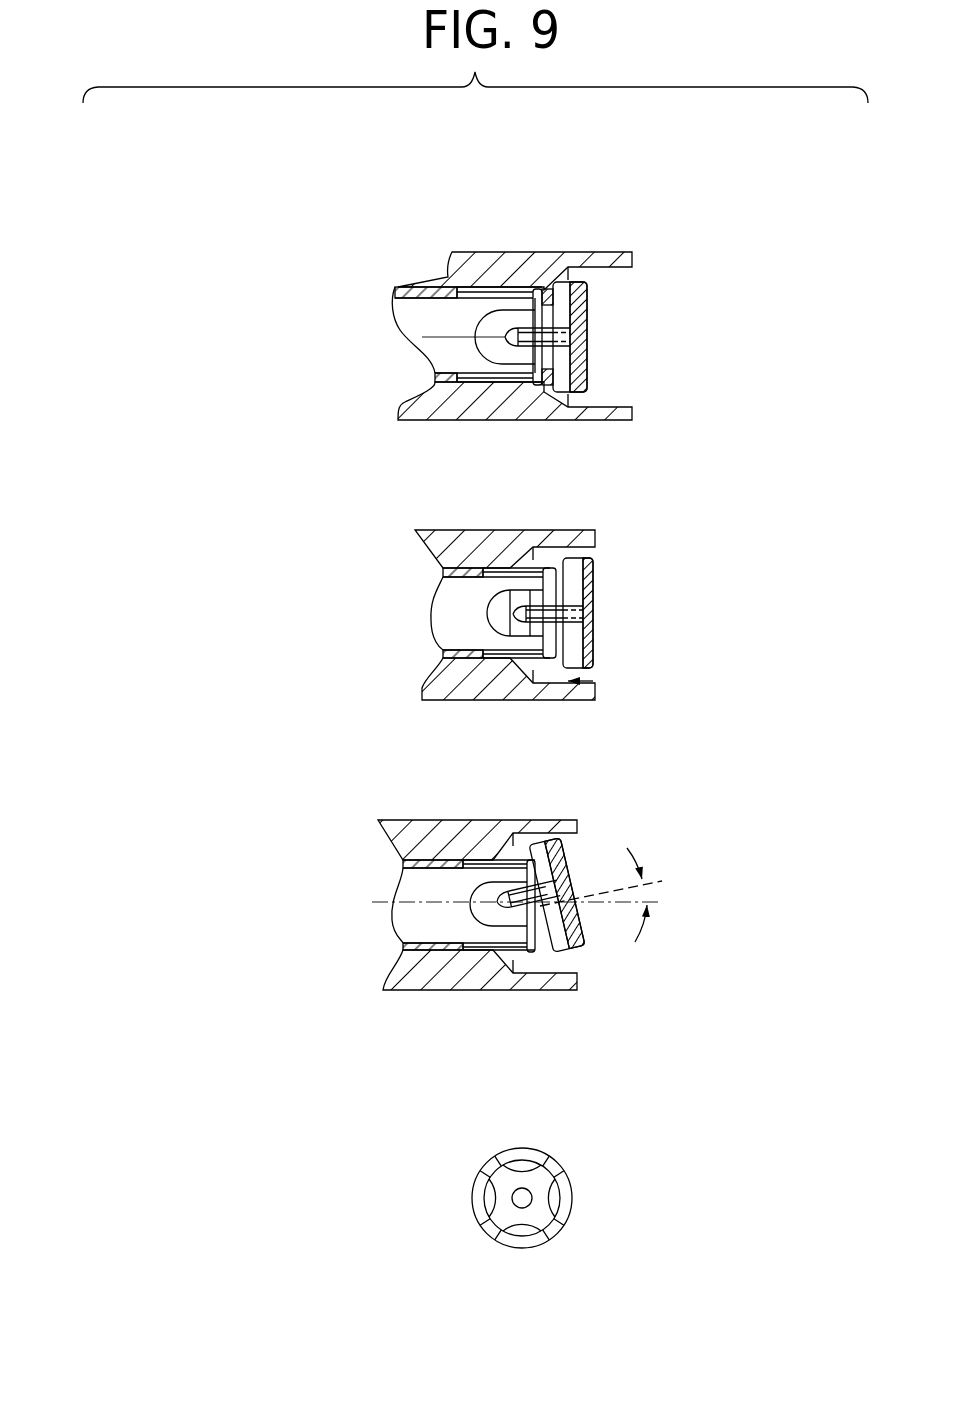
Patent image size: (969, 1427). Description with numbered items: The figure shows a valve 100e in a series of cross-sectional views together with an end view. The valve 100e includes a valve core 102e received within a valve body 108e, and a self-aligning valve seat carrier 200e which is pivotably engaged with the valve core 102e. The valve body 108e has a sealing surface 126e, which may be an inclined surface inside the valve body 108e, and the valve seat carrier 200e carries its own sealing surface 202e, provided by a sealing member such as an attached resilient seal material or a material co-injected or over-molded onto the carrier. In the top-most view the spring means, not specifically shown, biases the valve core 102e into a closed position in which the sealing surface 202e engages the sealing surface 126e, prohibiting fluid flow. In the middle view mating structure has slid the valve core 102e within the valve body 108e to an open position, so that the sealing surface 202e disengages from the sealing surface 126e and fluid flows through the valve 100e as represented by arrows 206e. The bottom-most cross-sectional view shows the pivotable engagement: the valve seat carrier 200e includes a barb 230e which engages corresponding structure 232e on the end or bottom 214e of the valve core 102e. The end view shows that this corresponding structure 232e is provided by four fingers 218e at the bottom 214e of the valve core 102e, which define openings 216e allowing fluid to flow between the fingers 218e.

The valve 100e is at (490, 238).
The valve core 102e is at (410, 285).
The valve body 108e is at (522, 262).
The sealing surface 126e is at (570, 278).
The self-aligning valve seat carrier 200e is at (590, 302).
The sealing surface 202e is at (562, 368).
The arrows 206e is at (475, 640).
The barb 230e is at (493, 900).
The bottom of the valve core 214e is at (570, 1213).
The openings 216e is at (524, 1163).
The fingers 218e is at (488, 1165).
The corresponding structure 232e is at (512, 1200).